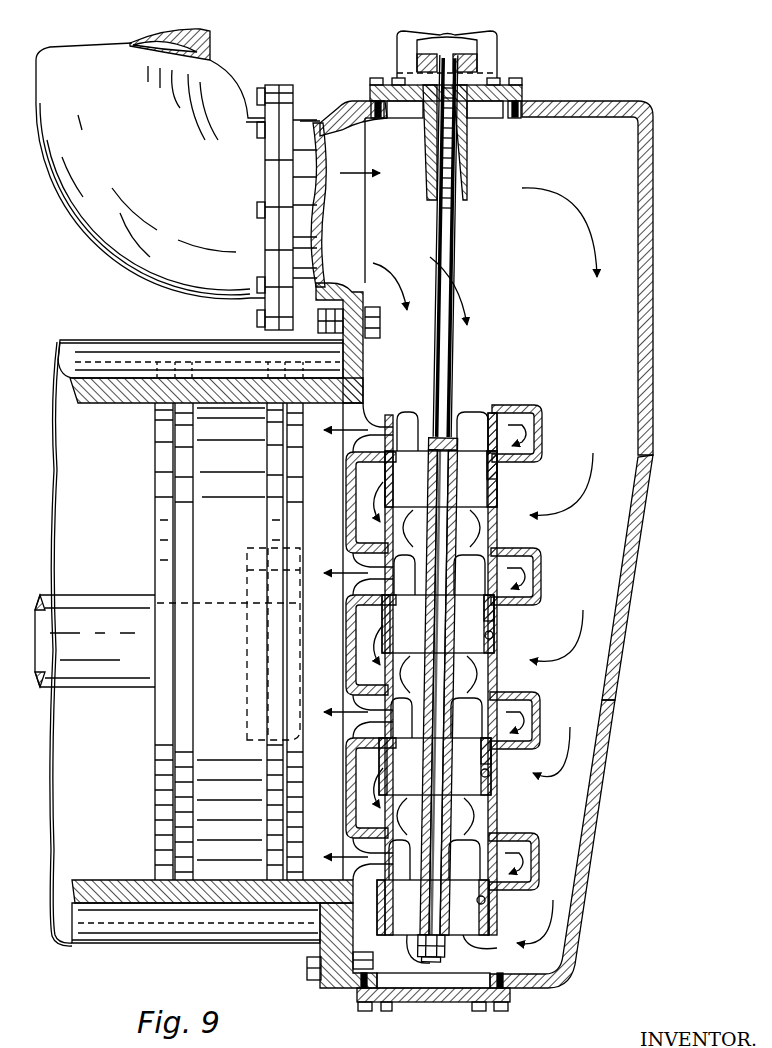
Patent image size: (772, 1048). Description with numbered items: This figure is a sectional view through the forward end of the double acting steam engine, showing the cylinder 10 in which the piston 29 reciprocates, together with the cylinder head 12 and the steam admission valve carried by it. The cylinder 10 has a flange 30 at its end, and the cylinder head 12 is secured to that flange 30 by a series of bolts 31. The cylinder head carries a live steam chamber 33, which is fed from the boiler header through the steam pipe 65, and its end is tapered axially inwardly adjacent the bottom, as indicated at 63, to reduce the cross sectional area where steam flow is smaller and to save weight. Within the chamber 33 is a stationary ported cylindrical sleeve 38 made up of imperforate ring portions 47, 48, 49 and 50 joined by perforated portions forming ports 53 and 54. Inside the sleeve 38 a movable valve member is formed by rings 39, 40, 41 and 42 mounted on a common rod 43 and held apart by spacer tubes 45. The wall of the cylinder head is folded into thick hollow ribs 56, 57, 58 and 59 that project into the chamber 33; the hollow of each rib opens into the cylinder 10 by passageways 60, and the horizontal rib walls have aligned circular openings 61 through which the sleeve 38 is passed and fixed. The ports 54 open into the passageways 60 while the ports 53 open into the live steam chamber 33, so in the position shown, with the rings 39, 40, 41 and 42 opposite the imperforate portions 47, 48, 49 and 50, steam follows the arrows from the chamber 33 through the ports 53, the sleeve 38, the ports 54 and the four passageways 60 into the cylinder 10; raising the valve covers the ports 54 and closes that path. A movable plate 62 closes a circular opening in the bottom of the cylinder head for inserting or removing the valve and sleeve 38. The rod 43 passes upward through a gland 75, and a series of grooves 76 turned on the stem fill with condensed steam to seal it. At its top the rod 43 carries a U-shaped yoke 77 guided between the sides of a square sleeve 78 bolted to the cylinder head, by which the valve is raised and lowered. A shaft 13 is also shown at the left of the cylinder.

The cylinder 10 is at (66, 942).
The cylinder head 12 is at (664, 192).
The rotor shaft 13 is at (90, 603).
The piston 29 is at (155, 824).
The flange 30 is at (325, 988).
The bolts 31 is at (330, 326).
The live steam chamber 33 is at (627, 523).
The stationary ported cylindrical sleeve 38 is at (497, 504).
The ring 39 is at (492, 477).
The ring 40 is at (493, 637).
The ring 41 is at (489, 774).
The ring 42 is at (485, 901).
The rod 43 is at (451, 261).
The spacer tubes 45 is at (490, 534).
The imperforate ring portion 47 is at (497, 493).
The imperforate ring portion 48 is at (494, 620).
The imperforate ring portion 49 is at (491, 761).
The imperforate ring portion 50 is at (488, 929).
The ports 53 is at (421, 412).
The ports 54 is at (383, 578).
The hollow rib 56 is at (541, 421).
The hollow rib 57 is at (540, 563).
The hollow rib 58 is at (537, 699).
The hollow rib 59 is at (536, 845).
The passageways 60 is at (363, 440).
The circular openings 61 is at (531, 404).
The movable plate 62 is at (441, 1002).
The taper 63 is at (588, 867).
The steam pipe 65 is at (200, 74).
The gland 75 is at (466, 159).
The grooves 76 is at (455, 193).
The U-shaped yoke 77 is at (478, 64).
The square sleeve 78 is at (487, 44).